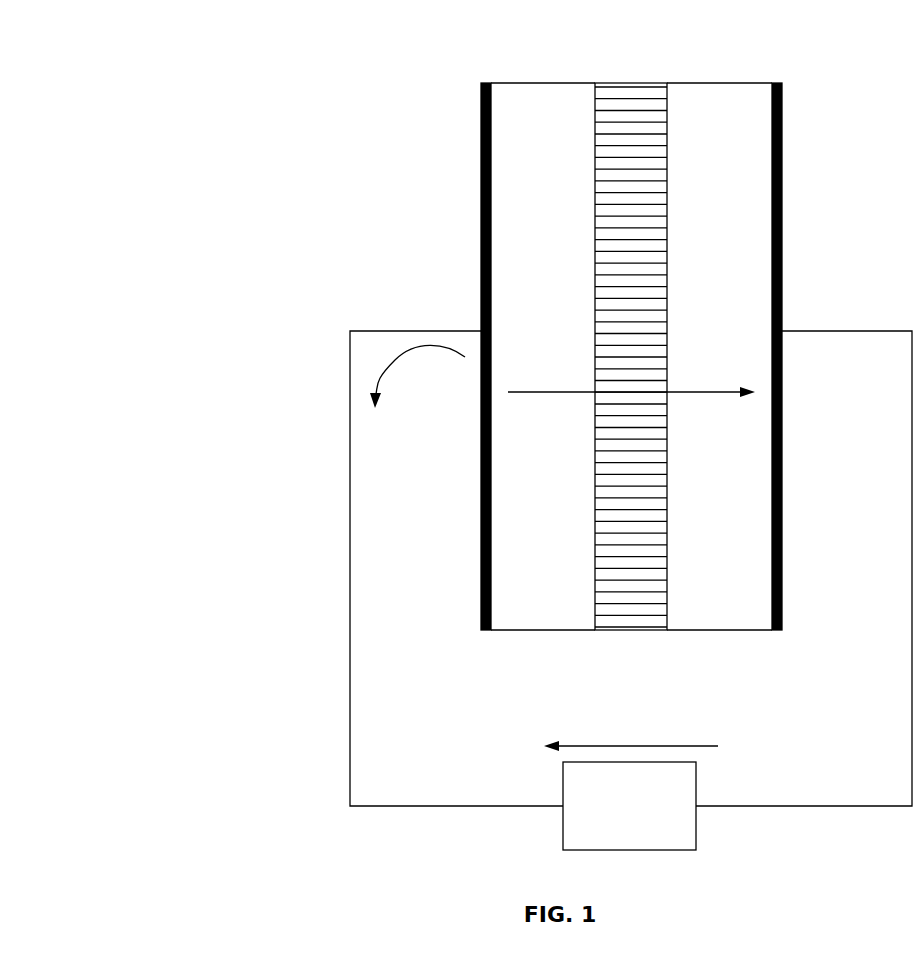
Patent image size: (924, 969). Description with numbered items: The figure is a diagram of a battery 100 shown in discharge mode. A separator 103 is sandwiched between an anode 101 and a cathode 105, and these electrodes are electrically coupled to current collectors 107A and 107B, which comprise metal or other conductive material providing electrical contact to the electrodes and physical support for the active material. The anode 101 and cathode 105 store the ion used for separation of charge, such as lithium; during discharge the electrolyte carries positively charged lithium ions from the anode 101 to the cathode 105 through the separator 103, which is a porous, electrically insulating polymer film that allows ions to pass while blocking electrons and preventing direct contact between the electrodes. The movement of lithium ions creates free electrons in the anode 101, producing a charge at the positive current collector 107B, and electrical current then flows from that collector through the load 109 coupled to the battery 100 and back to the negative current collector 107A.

The battery 100 is at (170, 174).
The anode 101 is at (526, 293).
The separator 103 is at (634, 82).
The cathode 105 is at (701, 293).
The negative current collector 107A is at (481, 100).
The positive current collector 107B is at (782, 107).
The load 109 is at (613, 831).